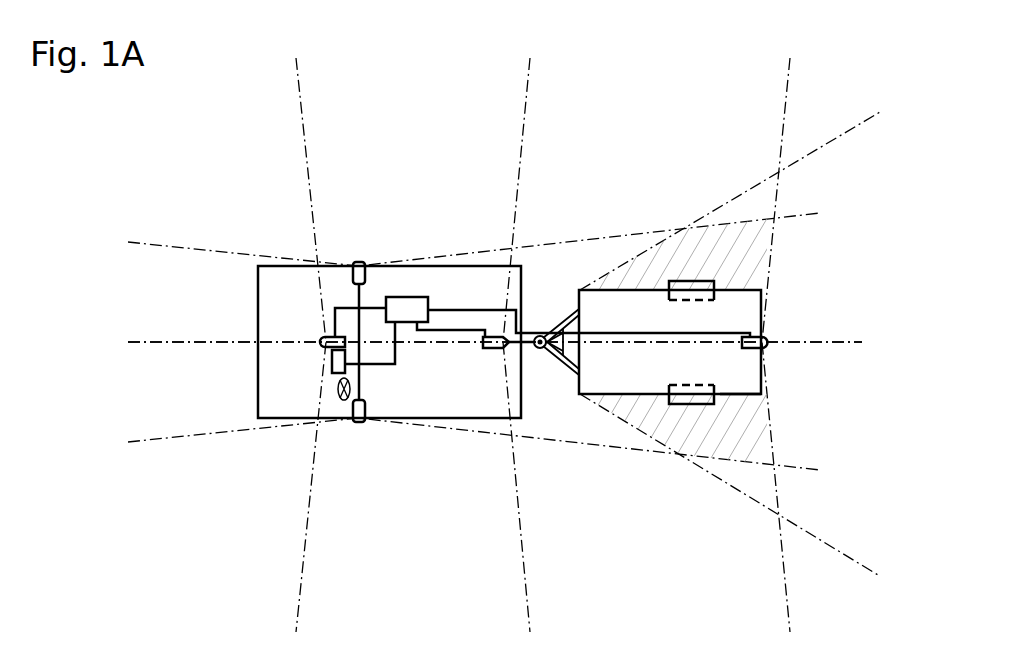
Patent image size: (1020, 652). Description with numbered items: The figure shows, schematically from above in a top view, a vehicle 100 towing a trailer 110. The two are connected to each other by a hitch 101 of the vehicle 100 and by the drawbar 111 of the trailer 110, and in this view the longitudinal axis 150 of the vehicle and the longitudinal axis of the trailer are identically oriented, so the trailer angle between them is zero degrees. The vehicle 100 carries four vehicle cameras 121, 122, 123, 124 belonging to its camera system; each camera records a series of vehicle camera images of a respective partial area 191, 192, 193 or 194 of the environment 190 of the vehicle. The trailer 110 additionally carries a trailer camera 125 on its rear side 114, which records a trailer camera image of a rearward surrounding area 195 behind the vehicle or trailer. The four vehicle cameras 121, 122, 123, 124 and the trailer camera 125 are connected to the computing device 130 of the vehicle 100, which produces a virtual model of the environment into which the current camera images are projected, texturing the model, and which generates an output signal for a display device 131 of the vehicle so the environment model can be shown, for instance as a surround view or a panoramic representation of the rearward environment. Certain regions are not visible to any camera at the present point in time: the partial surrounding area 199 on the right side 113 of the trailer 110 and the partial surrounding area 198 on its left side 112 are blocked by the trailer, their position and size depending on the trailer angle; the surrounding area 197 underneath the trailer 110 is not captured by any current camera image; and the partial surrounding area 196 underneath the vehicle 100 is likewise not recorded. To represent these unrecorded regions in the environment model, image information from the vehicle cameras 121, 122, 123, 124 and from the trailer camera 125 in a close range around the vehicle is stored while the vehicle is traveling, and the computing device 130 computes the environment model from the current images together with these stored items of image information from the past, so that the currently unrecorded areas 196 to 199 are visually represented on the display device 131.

The vehicle 100 is at (435, 266).
The hitch 101 is at (541, 348).
The trailer 110 is at (637, 290).
The drawbar 111 is at (556, 314).
The left side 112 is at (716, 403).
The right side 113 is at (716, 282).
The rear side 114 is at (763, 334).
The vehicle camera 121 is at (322, 338).
The vehicle camera 122 is at (358, 420).
The vehicle camera 123 is at (353, 266).
The vehicle camera 124 is at (494, 337).
The trailer camera 125 is at (703, 396).
The computing device 130 is at (395, 297).
The display device 131 is at (332, 363).
The longitudinal axis 150 is at (161, 339).
The environment 190 is at (247, 153).
The partial area 191 is at (247, 377).
The partial area 192 is at (452, 557).
The partial area 193 is at (452, 153).
The partial area 194 is at (655, 153).
The rearward surrounding area 195 is at (860, 377).
The partial surrounding area 196 is at (452, 377).
The surrounding area 197 is at (655, 377).
The partial surrounding area 198 is at (740, 430).
The partial surrounding area 199 is at (740, 248).